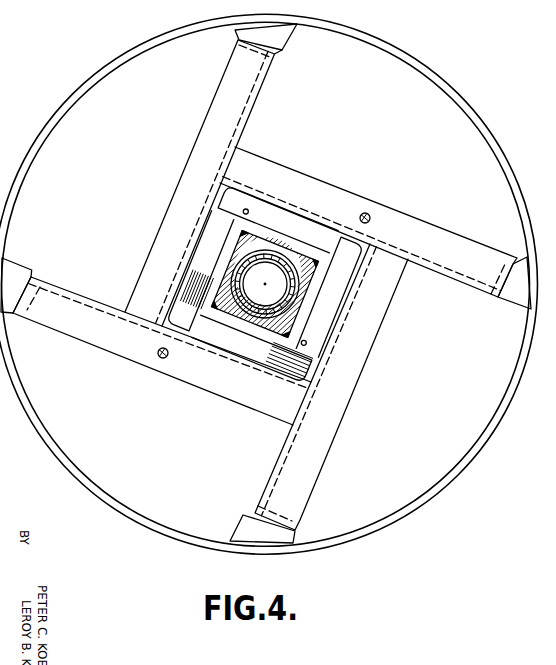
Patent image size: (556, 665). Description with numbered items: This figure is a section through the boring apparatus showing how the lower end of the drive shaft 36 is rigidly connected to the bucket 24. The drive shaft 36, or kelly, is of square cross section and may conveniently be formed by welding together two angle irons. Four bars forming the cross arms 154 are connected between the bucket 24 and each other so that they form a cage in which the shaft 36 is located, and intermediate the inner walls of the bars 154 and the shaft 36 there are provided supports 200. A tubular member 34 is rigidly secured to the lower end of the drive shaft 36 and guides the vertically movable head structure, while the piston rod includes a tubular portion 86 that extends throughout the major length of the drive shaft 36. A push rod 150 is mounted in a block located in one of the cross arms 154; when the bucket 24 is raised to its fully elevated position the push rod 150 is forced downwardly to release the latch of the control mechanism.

The bucket 24 is at (415, 506).
The cross arms 154 is at (440, 227).
The push rod 150 is at (369, 215).
The supports 200 is at (234, 201).
The drive shaft 36 is at (247, 328).
The tubular portion 86 is at (285, 280).
The tubular member 34 is at (296, 300).